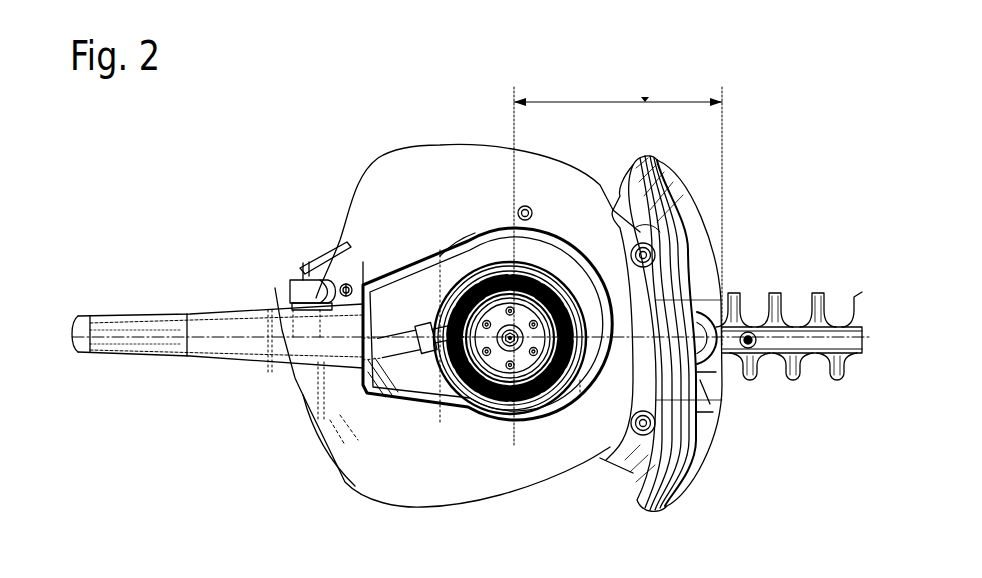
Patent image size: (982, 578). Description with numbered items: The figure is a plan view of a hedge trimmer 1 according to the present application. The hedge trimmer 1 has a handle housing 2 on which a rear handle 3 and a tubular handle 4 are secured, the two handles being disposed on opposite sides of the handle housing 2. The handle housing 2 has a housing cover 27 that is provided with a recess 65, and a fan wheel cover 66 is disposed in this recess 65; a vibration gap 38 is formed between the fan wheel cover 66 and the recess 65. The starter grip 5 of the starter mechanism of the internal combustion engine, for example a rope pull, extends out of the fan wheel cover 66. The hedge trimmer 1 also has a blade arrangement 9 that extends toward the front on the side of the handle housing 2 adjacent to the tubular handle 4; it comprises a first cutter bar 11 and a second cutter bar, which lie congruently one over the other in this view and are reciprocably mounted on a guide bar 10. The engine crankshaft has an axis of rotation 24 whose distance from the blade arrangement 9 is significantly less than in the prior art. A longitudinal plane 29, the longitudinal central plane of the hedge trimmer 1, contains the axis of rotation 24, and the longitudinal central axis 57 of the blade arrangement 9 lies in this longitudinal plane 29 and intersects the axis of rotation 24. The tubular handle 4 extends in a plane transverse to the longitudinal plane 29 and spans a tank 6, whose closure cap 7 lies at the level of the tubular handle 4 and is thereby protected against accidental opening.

The hedge trimmer 1 is at (268, 167).
The handle housing 2 is at (332, 476).
The rear handle 3 is at (120, 325).
The tubular handle 4 is at (676, 220).
The starter grip 5 is at (382, 358).
The tank 6 is at (705, 392).
The closure cap 7 is at (708, 358).
The blade arrangement 9 is at (816, 220).
The guide bar 10 is at (811, 355).
The first cutter bar 11 is at (777, 300).
The axis of rotation 24 is at (537, 413).
The housing cover 27 is at (416, 468).
The longitudinal plane 29 is at (279, 300).
The vibration gap 38 is at (455, 240).
The longitudinal central axis 57 is at (838, 320).
The recess 65 is at (422, 252).
The fan wheel cover 66 is at (465, 398).